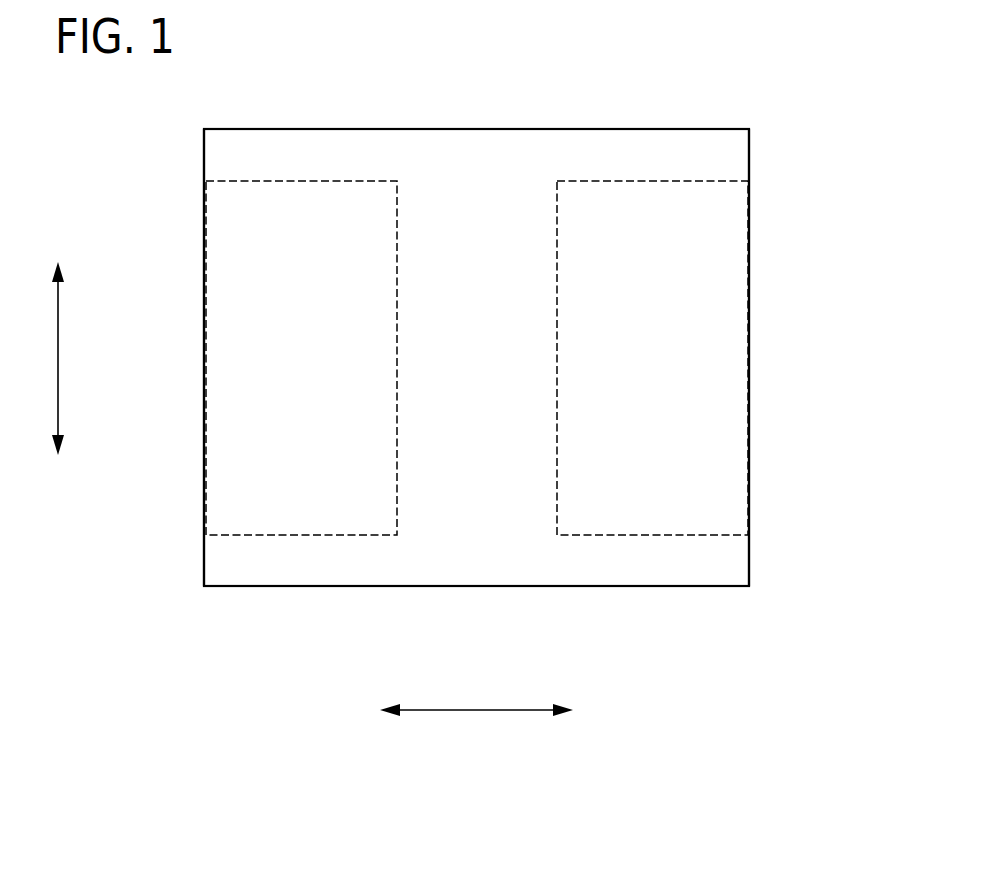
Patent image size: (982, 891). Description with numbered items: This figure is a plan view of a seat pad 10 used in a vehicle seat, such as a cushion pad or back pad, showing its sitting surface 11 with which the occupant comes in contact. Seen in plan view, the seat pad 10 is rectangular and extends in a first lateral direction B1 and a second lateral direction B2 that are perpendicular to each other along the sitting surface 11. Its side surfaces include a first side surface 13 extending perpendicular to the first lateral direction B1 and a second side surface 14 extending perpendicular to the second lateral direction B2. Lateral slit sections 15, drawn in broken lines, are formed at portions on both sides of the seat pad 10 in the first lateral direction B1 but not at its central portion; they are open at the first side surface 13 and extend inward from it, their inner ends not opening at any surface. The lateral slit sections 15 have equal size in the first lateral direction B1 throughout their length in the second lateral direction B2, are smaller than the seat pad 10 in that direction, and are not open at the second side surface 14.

The seat pad 10 is at (738, 85).
The sitting surface 11 is at (517, 155).
The first side surface 13 is at (204, 556).
The second side surface 14 is at (440, 129).
The lateral slit section 15 is at (255, 535).
The first lateral direction B1 is at (476, 729).
The second lateral direction B2 is at (42, 358).